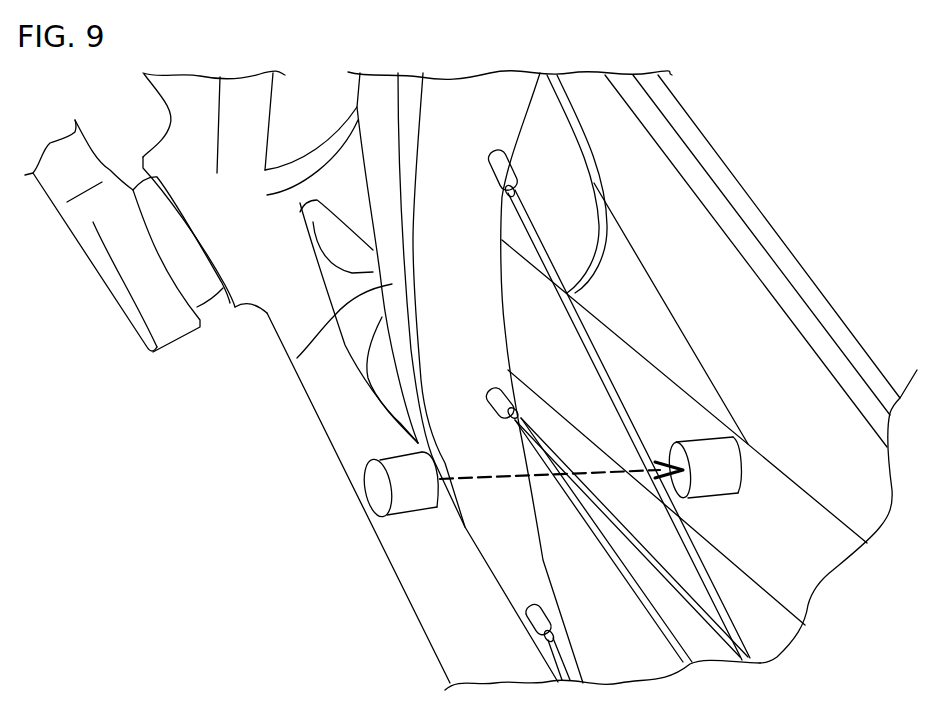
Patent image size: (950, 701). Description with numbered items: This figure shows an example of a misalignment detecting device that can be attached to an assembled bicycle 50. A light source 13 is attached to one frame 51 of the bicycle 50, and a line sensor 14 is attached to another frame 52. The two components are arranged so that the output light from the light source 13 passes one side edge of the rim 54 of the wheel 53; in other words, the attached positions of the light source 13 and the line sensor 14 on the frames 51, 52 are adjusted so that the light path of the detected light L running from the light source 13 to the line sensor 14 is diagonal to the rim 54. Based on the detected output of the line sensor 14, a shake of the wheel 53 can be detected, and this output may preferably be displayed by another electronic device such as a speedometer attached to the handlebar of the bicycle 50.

The light source 13 is at (377, 495).
The line sensor 14 is at (727, 480).
The bicycle 50 is at (317, 567).
The frame 51 is at (447, 625).
The frame 52 is at (813, 517).
The wheel 53 is at (297, 358).
The rim 54 is at (427, 377).
The detected light L is at (495, 480).